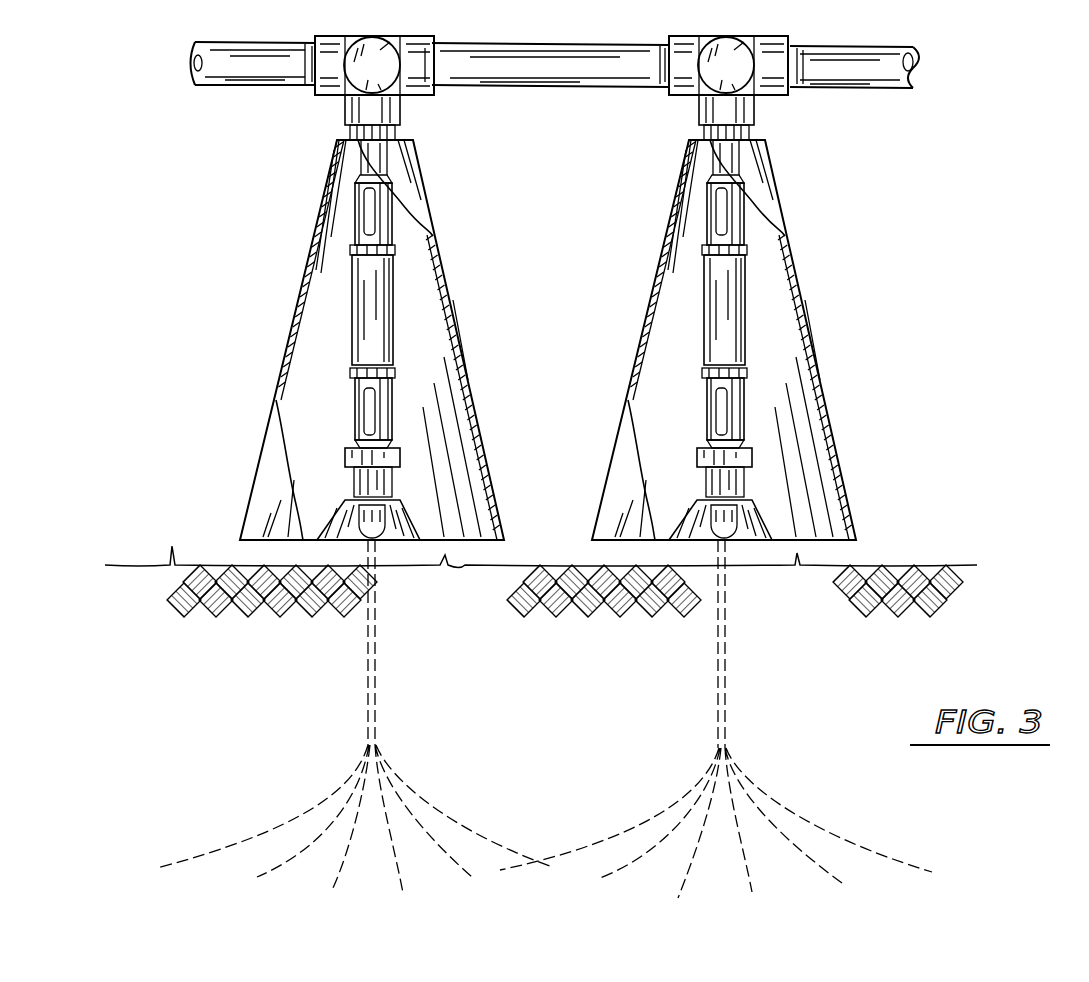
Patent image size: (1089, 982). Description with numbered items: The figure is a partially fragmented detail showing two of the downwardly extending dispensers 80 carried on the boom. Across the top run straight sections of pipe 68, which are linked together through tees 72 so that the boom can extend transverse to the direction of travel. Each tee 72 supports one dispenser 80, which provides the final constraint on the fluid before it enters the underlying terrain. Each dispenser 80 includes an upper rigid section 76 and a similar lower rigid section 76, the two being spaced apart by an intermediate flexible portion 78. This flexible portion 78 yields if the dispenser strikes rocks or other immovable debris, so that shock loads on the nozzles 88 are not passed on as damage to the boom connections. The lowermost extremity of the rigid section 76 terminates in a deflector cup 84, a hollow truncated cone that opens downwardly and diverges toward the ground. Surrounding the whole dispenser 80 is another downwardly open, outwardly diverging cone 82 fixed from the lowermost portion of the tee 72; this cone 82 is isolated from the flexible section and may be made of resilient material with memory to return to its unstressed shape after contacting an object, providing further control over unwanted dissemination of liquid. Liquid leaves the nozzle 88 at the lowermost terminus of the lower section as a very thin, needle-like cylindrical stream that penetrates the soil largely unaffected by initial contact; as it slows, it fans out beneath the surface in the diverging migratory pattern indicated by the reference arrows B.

The straight section of pipe 68 is at (248, 68).
The tee 72 is at (372, 90).
The rigid section 76 is at (385, 228).
The intermediate flexible portion 78 is at (372, 303).
The dispenser 80 is at (522, 519).
The cone 82 is at (452, 312).
The deflector cup 84 is at (340, 508).
The nozzle 88 is at (378, 548).
The reference arrows B is at (427, 826).